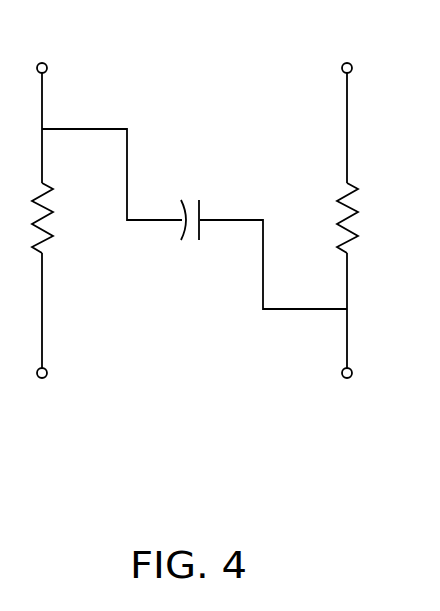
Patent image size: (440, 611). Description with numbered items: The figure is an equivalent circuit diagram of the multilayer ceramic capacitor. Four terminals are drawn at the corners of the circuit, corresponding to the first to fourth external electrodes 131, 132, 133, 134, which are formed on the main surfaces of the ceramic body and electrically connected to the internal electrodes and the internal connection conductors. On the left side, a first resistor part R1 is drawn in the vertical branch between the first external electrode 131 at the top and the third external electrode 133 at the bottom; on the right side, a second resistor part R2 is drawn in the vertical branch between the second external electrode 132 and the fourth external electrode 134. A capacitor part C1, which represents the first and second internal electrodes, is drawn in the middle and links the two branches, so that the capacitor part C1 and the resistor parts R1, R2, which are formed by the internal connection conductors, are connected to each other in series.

The first external electrode 131 is at (42, 49).
The second external electrode 132 is at (347, 49).
The third external electrode 133 is at (44, 390).
The fourth external electrode 134 is at (349, 390).
The resistor part R1 is at (63, 218).
The resistor part R2 is at (368, 218).
The capacitor part C1 is at (194, 238).